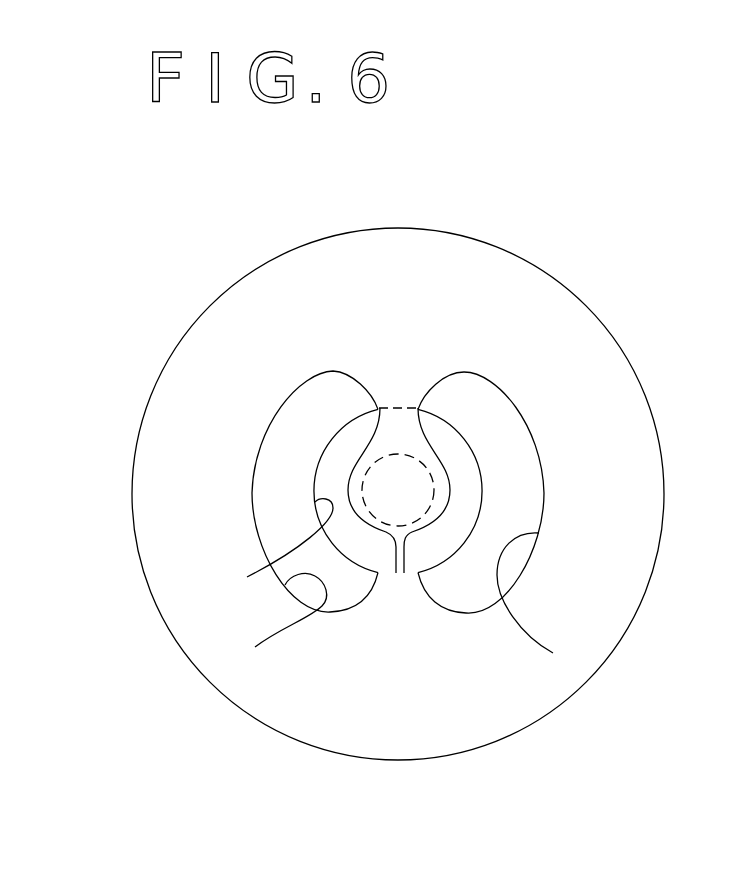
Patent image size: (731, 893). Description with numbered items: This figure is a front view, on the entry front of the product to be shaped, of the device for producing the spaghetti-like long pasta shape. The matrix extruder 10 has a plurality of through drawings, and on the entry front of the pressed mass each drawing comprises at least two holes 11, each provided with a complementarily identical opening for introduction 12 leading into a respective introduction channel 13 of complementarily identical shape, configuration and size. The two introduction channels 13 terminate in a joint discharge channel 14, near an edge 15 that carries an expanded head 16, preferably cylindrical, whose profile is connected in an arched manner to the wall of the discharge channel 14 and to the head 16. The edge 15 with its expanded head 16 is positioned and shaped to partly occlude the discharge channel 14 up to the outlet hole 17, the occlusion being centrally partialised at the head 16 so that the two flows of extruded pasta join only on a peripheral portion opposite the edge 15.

The matrix extruder 10 is at (548, 737).
The holes 11 is at (248, 428).
The opening for introduction 12 is at (332, 372).
The introduction channel 13 is at (255, 647).
The discharge channel 14 is at (405, 425).
The edge 15 is at (402, 566).
The expanded head 16 is at (388, 505).
The outlet hole 17 is at (247, 577).